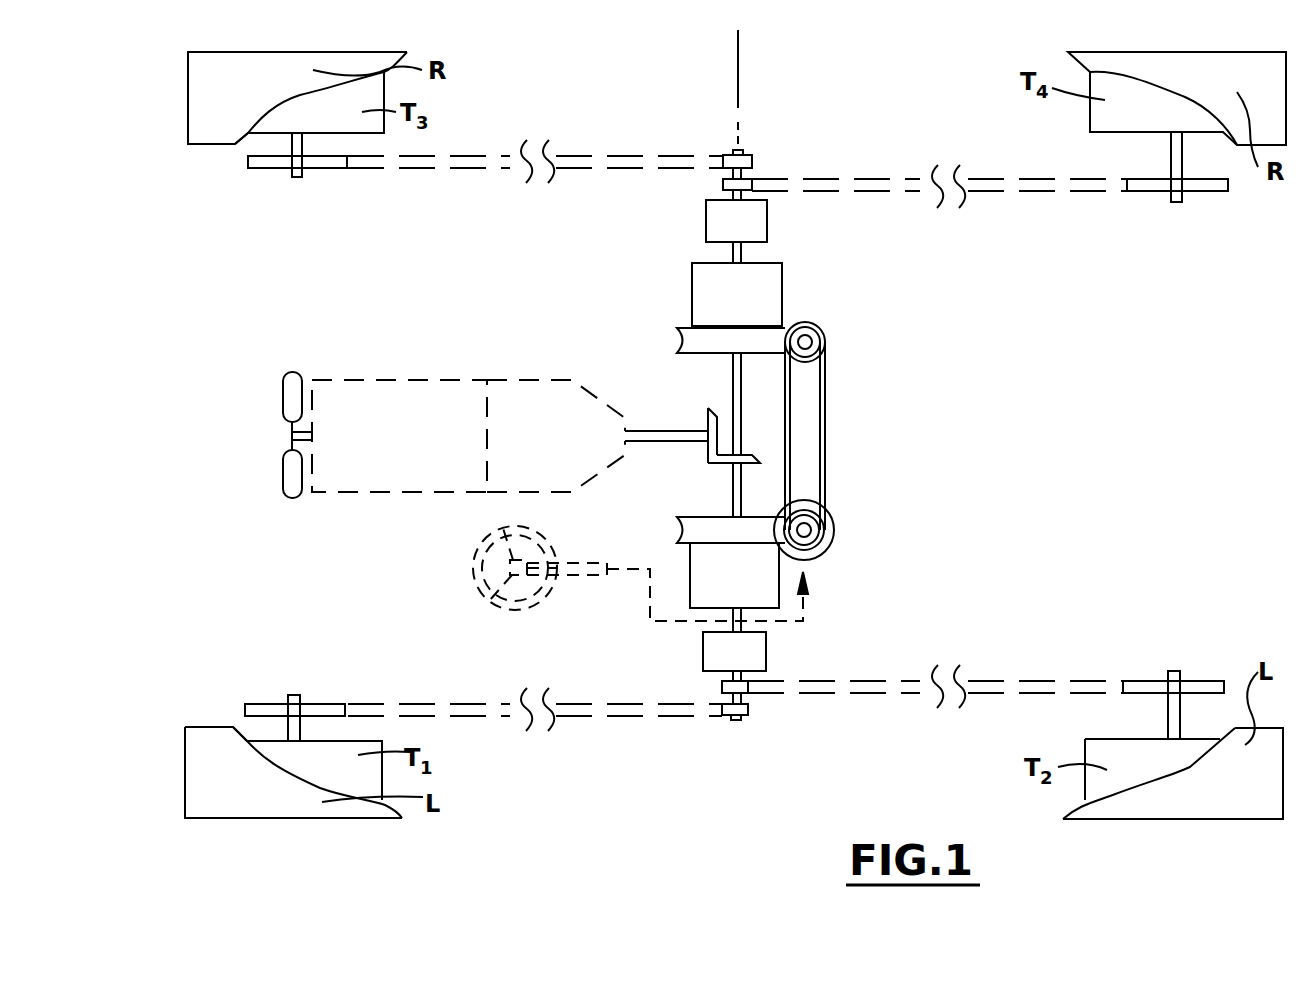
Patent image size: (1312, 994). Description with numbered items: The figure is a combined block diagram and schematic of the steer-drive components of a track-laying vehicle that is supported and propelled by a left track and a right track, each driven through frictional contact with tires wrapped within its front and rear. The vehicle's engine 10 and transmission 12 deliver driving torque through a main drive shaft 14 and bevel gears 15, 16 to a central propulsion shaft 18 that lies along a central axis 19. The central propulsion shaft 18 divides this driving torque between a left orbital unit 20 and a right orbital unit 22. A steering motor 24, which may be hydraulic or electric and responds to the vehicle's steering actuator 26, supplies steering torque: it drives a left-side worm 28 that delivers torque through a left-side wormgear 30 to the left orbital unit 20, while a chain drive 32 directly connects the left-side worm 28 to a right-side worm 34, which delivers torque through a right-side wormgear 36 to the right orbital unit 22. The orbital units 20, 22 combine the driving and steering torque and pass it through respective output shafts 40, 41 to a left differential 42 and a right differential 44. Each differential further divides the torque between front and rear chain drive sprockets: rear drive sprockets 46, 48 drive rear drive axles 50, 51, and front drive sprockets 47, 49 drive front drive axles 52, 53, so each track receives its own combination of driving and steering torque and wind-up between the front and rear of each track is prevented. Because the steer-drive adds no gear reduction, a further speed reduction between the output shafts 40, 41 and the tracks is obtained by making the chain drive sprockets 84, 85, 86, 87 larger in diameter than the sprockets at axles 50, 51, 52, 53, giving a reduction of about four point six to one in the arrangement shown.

The engine 10 is at (416, 398).
The transmission 12 is at (529, 393).
The main drive shaft 14 is at (680, 440).
The bevel gear 15 is at (708, 423).
The bevel gear 16 is at (745, 455).
The central propulsion shaft 18 is at (735, 385).
The central axis 19 is at (738, 72).
The left orbital unit 20 is at (752, 584).
The right orbital unit 22 is at (753, 306).
The steering motor 24 is at (835, 527).
The steering actuator 26 is at (495, 541).
The left-side worm 28 is at (813, 540).
The left-side wormgear 30 is at (700, 523).
The chain drive 32 is at (826, 441).
The right-side worm 34 is at (825, 342).
The right-side wormgear 36 is at (757, 332).
The output shaft 40 is at (735, 625).
The output shaft 41 is at (733, 251).
The left differential 42 is at (755, 647).
The right differential 44 is at (755, 221).
The rear drive sprocket 46 is at (733, 688).
The front drive sprocket 47 is at (745, 710).
The rear drive sprocket 48 is at (723, 183).
The front drive sprocket 49 is at (748, 162).
The rear drive axle 50 is at (1172, 710).
The rear drive axle 51 is at (1175, 152).
The front drive axle 52 is at (293, 726).
The front drive axle 53 is at (303, 145).
The chain drive sprocket 84 is at (1148, 688).
The chain drive sprocket 85 is at (1153, 185).
The chain drive sprocket 86 is at (268, 712).
The chain drive sprocket 87 is at (283, 163).